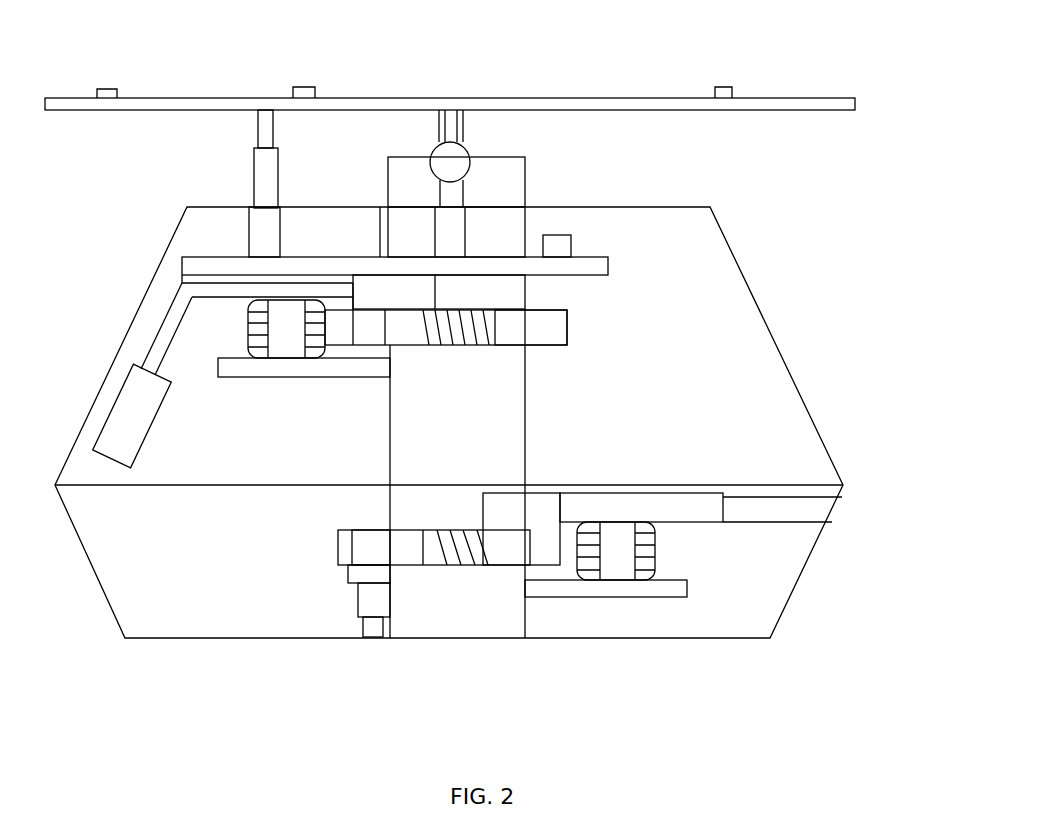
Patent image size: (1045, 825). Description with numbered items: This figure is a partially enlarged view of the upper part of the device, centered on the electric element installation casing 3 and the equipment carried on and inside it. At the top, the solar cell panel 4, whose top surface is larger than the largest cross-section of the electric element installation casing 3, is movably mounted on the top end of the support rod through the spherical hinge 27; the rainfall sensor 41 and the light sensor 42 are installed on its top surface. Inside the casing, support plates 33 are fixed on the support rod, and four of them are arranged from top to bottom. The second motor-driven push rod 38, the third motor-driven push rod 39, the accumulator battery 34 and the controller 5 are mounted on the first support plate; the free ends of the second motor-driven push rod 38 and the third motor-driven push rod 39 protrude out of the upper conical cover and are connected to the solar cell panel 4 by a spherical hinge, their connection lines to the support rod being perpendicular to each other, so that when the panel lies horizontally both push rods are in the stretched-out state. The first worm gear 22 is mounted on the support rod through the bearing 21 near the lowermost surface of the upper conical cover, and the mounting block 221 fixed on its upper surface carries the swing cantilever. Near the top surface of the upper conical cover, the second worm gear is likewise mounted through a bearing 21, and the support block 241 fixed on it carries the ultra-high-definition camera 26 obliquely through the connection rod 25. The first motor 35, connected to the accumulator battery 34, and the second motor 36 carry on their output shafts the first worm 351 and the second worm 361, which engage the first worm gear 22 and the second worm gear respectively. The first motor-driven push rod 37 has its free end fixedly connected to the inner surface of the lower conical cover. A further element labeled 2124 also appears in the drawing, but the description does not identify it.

The electric element installation casing 3 is at (821, 537).
The solar cell panel 4 is at (573, 96).
The rainfall sensor 41 is at (723, 87).
The light sensor 42 is at (301, 89).
The controller 5 is at (561, 245).
The bearing 21 is at (387, 539).
The first worm gear 22 is at (357, 539).
The mounting block 221 is at (530, 500).
The support block 241 is at (410, 295).
The upper slide bar end 2124 is at (514, 338).
The connection rod 25 is at (181, 315).
The ultra-high-definition camera 26 is at (150, 412).
The spherical hinge 27 is at (440, 150).
The support plate 33 is at (353, 373).
The accumulator battery 34 is at (299, 224).
The first motor 35 is at (651, 557).
The first worm 351 is at (449, 553).
The second motor 36 is at (289, 351).
The second worm 361 is at (442, 341).
The first motor-driven push rod 37 is at (376, 612).
The second motor-driven push rod 38 is at (262, 172).
The third motor-driven push rod 39 is at (464, 197).